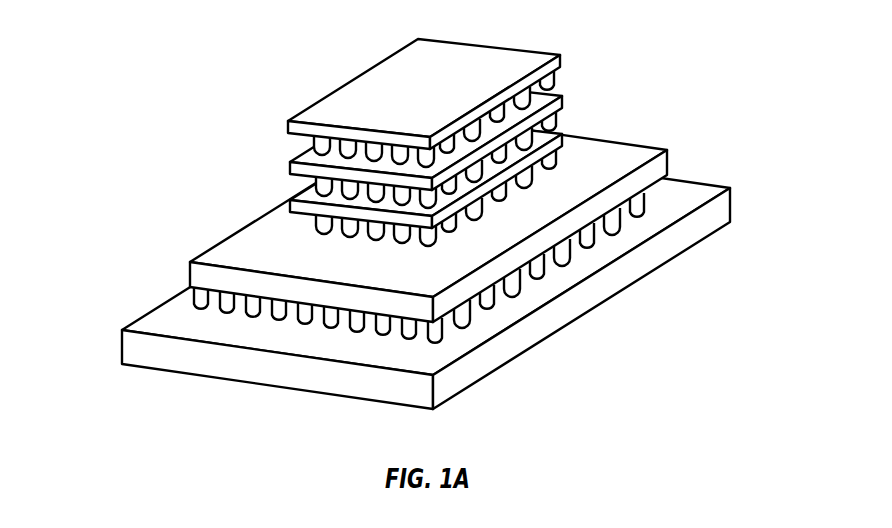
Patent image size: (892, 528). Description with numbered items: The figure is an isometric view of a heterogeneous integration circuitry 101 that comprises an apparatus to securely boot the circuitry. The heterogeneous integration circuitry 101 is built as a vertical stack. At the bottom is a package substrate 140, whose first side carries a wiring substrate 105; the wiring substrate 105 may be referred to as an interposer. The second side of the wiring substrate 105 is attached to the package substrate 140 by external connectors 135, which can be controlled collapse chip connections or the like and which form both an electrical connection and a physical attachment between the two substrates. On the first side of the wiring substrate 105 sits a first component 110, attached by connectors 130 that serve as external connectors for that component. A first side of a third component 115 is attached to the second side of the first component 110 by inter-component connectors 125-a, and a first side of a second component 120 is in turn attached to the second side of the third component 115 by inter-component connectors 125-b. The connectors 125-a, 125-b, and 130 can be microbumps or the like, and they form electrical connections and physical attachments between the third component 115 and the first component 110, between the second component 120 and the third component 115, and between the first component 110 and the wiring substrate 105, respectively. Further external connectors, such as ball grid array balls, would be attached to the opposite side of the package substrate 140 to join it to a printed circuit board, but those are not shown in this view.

The heterogeneous integration circuitry 101 is at (660, 417).
The wiring substrate 105 is at (189, 266).
The first component 110 is at (289, 125).
The third component 115 is at (289, 167).
The second component 120 is at (289, 205).
The connectors 125-a is at (533, 141).
The connectors 125-b is at (533, 102).
The connectors 130 is at (533, 178).
The external connectors 135 is at (669, 188).
The package substrate 140 is at (124, 338).